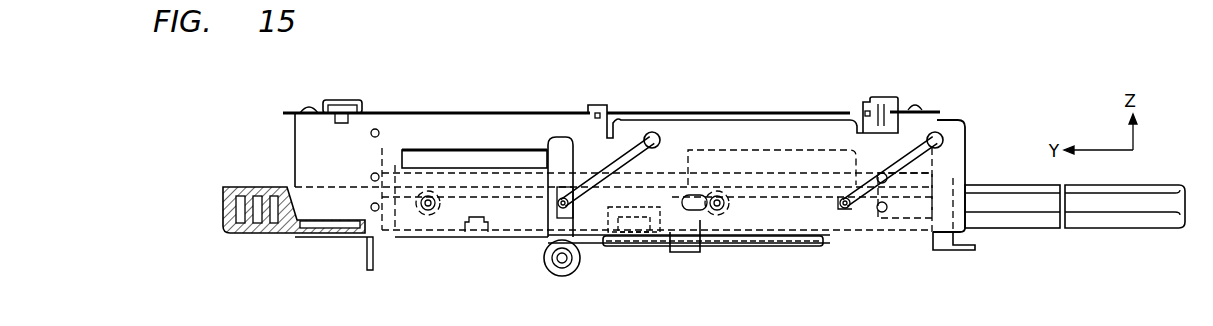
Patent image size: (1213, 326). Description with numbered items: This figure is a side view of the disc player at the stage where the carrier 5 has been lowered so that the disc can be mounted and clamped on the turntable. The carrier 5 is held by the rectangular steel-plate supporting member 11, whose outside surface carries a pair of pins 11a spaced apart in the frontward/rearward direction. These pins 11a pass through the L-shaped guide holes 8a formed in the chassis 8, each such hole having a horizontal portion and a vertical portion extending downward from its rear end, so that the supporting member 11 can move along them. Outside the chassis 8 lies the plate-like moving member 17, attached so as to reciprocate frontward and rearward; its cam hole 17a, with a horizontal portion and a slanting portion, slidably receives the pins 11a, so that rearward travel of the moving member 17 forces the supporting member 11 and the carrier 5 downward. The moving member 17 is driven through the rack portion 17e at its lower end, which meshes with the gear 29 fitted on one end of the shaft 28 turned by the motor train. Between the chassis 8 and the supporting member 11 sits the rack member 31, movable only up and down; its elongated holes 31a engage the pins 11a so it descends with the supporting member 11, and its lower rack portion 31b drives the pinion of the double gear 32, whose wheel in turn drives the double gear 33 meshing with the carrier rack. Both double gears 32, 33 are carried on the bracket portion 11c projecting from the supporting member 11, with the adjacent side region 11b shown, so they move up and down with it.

The carrier 5 is at (1160, 183).
The chassis 8 is at (339, 207).
The L-shaped guide holes 8a is at (470, 158).
The supporting member 11 is at (944, 176).
The pins 11a is at (845, 198).
The holder side plate 11b is at (563, 170).
The bracket portion 11c is at (688, 253).
The moving member 17 is at (913, 203).
The cam hole 17a is at (630, 165).
The rack portion 17e is at (764, 248).
The shaft 28 is at (553, 272).
The gear 29 is at (572, 276).
The rack member 31 is at (384, 228).
The elongated holes 31a is at (394, 228).
The rack portion 31b is at (533, 230).
The double gear 32 is at (605, 250).
The double gear 33 is at (646, 209).